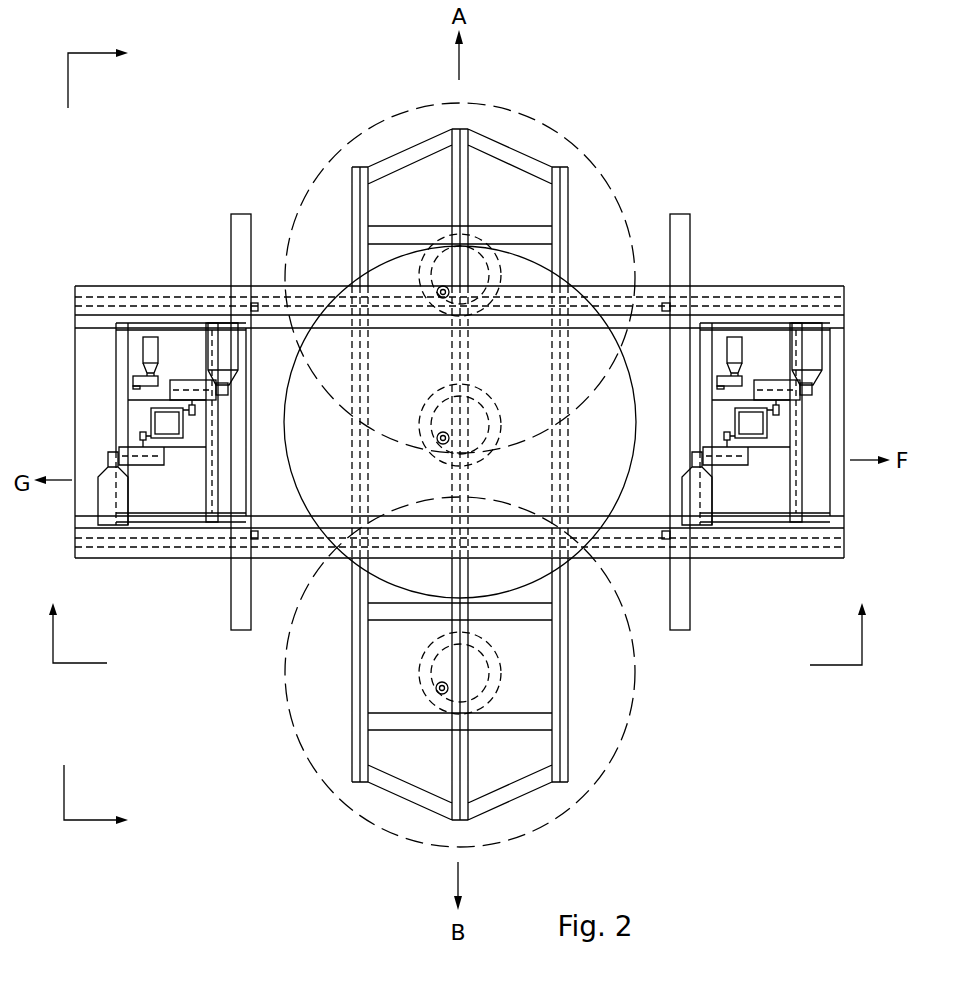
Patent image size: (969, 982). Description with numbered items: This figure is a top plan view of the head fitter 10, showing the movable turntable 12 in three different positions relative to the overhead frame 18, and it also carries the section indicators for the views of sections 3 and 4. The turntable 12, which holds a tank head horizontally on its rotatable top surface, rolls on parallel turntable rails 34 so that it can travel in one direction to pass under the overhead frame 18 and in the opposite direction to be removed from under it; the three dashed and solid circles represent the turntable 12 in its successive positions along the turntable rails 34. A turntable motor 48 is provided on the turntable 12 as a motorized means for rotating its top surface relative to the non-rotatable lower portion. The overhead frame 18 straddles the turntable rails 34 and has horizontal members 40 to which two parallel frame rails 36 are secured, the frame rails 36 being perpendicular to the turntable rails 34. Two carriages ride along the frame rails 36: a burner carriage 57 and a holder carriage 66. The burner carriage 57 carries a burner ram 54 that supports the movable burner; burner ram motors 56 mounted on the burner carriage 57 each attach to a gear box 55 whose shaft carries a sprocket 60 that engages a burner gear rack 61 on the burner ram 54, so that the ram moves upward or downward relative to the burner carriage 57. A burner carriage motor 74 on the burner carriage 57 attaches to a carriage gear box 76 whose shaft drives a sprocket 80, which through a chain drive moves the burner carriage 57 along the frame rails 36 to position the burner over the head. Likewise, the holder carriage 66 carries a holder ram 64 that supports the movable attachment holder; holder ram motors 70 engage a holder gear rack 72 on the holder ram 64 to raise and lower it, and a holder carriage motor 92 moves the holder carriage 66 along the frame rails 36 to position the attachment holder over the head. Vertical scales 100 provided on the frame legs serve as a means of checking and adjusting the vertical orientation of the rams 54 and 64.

The head fitter 10 is at (708, 157).
The movable turntable 12 is at (362, 132).
The overhead frame 18 is at (736, 287).
The turntable rails 34 is at (352, 640).
The frame rails 36 is at (830, 326).
The horizontal members 40 is at (268, 287).
The turntable motor 48 is at (440, 288).
The burner ram 54 is at (170, 392).
The gear box 55 is at (168, 323).
The burner ram motors 56 is at (209, 335).
The burner carriage 57 is at (214, 522).
The sprocket 60 is at (151, 425).
The burner gear rack 61 is at (140, 434).
The holder ram 64 is at (767, 430).
The holder carriage 66 is at (802, 490).
The holder ram motors 70 is at (822, 352).
The holder gear rack 72 is at (779, 412).
The burner carriage motor 74 is at (143, 345).
The carriage gear box 76 is at (146, 368).
The sprocket 80 is at (135, 380).
The holder carriage motor 92 is at (727, 352).
The vertical scales 100 is at (255, 311).
The section line 3- 3 is at (457, 634).
The section line 4- 4 is at (96, 436).